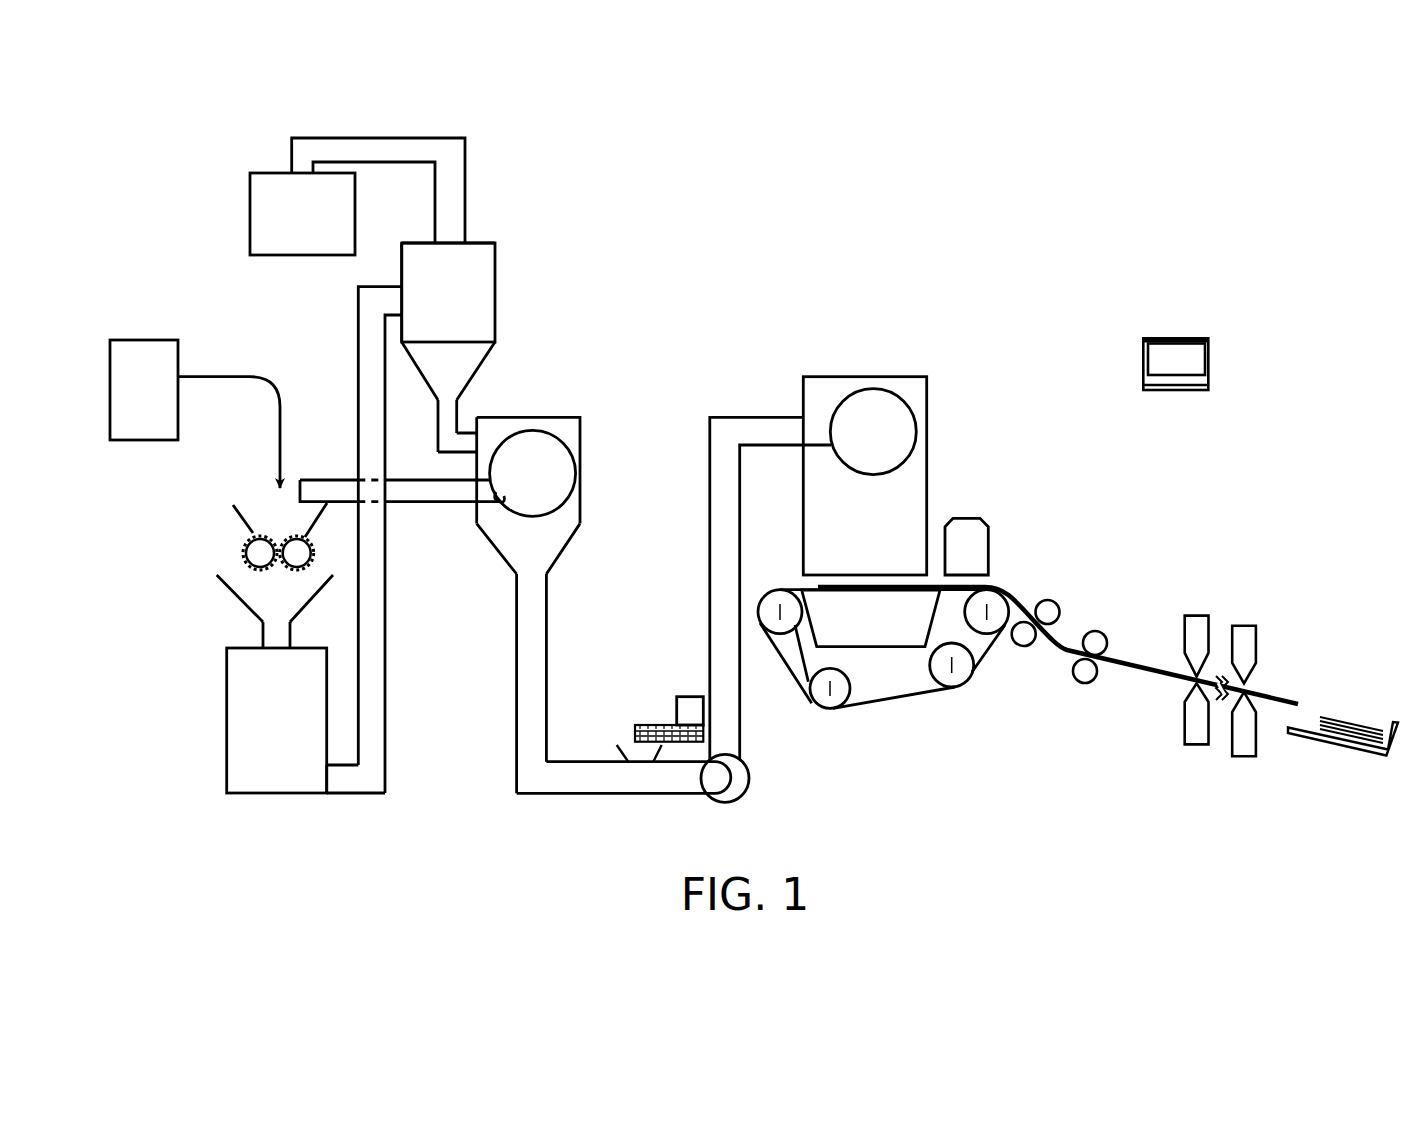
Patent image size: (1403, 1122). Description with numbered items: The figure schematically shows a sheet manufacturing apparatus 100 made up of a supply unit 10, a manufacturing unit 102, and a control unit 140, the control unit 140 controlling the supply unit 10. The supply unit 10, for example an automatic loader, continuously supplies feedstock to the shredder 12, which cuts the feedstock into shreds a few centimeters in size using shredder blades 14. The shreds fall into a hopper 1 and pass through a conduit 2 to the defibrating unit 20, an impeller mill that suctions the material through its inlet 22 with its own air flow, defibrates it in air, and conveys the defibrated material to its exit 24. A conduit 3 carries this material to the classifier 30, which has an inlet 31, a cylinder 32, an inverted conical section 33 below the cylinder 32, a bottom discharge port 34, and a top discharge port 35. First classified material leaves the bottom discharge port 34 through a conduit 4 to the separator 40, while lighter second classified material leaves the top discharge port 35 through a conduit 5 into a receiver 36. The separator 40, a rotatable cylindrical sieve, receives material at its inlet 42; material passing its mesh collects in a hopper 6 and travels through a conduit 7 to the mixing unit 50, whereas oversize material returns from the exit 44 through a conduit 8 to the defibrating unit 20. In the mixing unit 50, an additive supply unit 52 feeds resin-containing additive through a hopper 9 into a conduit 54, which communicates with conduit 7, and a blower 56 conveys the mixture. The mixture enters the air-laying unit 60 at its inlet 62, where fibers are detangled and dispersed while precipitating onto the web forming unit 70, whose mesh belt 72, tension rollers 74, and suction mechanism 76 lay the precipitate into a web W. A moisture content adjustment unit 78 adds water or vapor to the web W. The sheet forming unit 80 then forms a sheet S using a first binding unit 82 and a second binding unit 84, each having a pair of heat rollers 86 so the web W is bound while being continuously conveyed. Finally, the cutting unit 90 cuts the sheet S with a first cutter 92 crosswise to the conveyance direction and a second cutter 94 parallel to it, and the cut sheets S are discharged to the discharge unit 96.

The hopper 1 is at (233, 593).
The conduit 2 is at (257, 633).
The conduit 3 is at (372, 667).
The conduit 4 is at (462, 440).
The conduit 5 is at (403, 152).
The hopper 6 is at (572, 552).
The conduit 7 is at (531, 643).
The conduit 8 is at (417, 494).
The hopper 9 is at (617, 749).
The supply unit 10 is at (206, 334).
The shredder 12 is at (212, 514).
The shredder blades 14 is at (261, 552).
The defibrating unit 20 is at (214, 800).
The inlet 22 is at (273, 656).
The exit 24 is at (323, 778).
The classifier 30 is at (504, 236).
The inlet 31 is at (408, 292).
The cylinder 32 is at (483, 310).
The inverted conical section 33 is at (460, 352).
The bottom discharge port 34 is at (447, 387).
The top discharge port 35 is at (448, 246).
The receiver 36 is at (273, 217).
The separator 40 is at (596, 406).
The inlet 42 is at (505, 442).
The exit 44 is at (500, 500).
The mixing unit 50 is at (760, 802).
The additive supply unit 52 is at (689, 697).
The conduit 54 is at (724, 609).
The blower 56 is at (738, 785).
The air-laying unit 60 is at (957, 377).
The inlet 62 is at (836, 428).
The web forming unit 70 is at (946, 745).
The mesh belt 72 is at (800, 590).
The tension rollers 74 is at (780, 616).
The suction mechanism 76 is at (863, 625).
The moisture content adjustment unit 78 is at (964, 533).
The sheet forming unit 80 is at (1086, 553).
The first binding unit 82 is at (1066, 597).
The second binding unit 84 is at (1110, 625).
The heat rollers 86 is at (1046, 610).
The cutting unit 90 is at (1212, 553).
The first cutter 92 is at (1197, 601).
The second cutter 94 is at (1244, 611).
The discharge unit 96 is at (1373, 755).
The sheet manufacturing apparatus 100 is at (1128, 256).
The manufacturing unit 102 is at (1027, 331).
The control unit 140 is at (1195, 348).
The web W is at (1012, 586).
The sheet S is at (1156, 663).